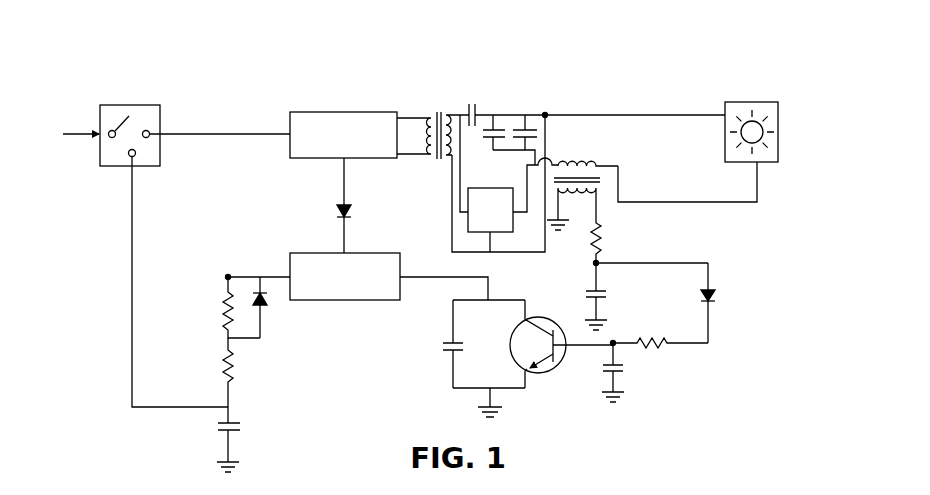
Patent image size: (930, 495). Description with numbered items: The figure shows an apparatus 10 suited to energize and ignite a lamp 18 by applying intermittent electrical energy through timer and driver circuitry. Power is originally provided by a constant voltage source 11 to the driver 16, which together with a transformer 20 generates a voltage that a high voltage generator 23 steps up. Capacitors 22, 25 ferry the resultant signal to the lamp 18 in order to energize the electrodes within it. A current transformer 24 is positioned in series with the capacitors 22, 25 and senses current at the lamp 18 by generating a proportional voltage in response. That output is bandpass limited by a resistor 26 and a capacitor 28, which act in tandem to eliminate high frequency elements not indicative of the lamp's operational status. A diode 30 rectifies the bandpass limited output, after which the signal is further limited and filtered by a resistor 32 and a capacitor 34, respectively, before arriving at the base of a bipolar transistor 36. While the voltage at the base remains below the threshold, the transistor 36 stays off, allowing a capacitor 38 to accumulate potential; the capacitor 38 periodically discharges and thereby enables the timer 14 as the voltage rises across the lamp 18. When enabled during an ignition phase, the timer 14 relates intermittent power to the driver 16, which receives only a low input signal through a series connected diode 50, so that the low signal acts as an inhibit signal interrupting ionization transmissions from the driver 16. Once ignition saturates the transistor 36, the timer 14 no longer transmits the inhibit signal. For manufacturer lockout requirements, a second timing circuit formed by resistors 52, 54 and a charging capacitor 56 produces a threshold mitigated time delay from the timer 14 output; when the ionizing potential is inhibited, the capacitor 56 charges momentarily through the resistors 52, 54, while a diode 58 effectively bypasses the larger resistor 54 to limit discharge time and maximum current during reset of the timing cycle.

The apparatus 10 is at (761, 42).
The constant voltage source 11 is at (162, 121).
The timer 14 is at (338, 300).
The driver 16 is at (374, 112).
The lamp 18 is at (777, 103).
The transformer 20 is at (437, 111).
The capacitor 22 is at (493, 112).
The high voltage generator 23 is at (492, 238).
The current transformer 24 is at (578, 162).
The capacitor 25 is at (474, 103).
The resistor 26 is at (603, 241).
The capacitor 28 is at (609, 292).
The diode 30 is at (717, 296).
The resistor 32 is at (656, 350).
The capacitor 34 is at (626, 368).
The bipolar transistor 36 is at (559, 365).
The capacitor 38 is at (441, 344).
The diode 50 is at (352, 210).
The resistor 52 is at (221, 368).
The resistor 54 is at (221, 313).
The charging capacitor 56 is at (241, 427).
The diode 58 is at (264, 300).